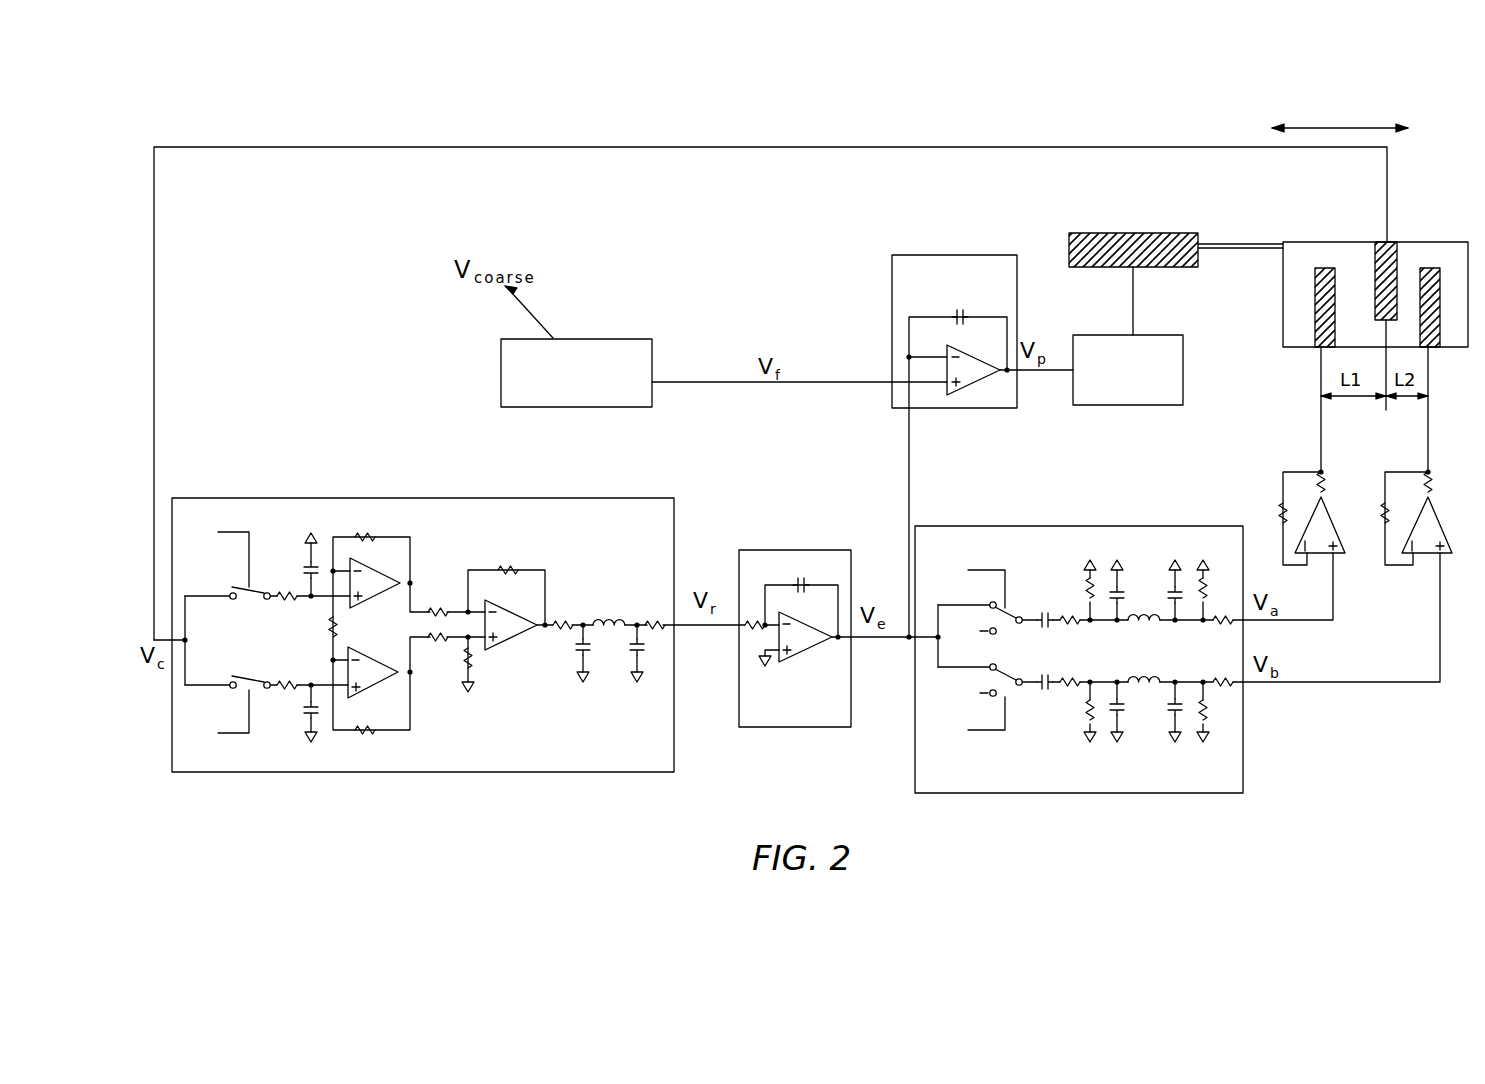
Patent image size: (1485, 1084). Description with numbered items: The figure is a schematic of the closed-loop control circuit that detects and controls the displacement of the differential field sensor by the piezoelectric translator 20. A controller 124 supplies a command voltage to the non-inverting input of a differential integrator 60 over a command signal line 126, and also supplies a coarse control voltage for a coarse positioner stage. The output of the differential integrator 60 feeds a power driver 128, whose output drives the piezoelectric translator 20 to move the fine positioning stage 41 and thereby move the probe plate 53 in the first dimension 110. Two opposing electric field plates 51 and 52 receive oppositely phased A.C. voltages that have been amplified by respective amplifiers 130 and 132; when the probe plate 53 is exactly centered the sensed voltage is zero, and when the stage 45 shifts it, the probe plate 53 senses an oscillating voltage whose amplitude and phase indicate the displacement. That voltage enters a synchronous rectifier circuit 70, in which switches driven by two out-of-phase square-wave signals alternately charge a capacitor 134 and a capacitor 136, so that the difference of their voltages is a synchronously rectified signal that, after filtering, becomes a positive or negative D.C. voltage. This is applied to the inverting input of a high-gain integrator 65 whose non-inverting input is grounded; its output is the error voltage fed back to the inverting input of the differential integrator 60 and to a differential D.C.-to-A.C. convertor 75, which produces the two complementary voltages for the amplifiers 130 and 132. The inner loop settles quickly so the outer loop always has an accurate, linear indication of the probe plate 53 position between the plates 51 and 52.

The first dimension 110 is at (1335, 126).
The piezoelectric translator 20 is at (1128, 233).
The fine positioning stage 41 is at (1307, 275).
The fine positioning stage 45 is at (1358, 242).
The electric field plate 51 is at (1325, 268).
The electric field plate 52 is at (1438, 268).
The probe plate 53 is at (1388, 242).
The controller 124 is at (620, 339).
The command signal line 126 is at (708, 382).
The power driver 128 is at (1160, 335).
The differential integrator 60 is at (966, 287).
The high-gain integrator 65 is at (806, 705).
The synchronous rectifier circuit 70 is at (458, 635).
The differential D.C.-to-A.C. convertor 75 is at (1050, 770).
The amplifier 130 is at (1279, 498).
The amplifier 132 is at (1401, 496).
The capacitor 134 is at (306, 566).
The capacitor 136 is at (306, 714).